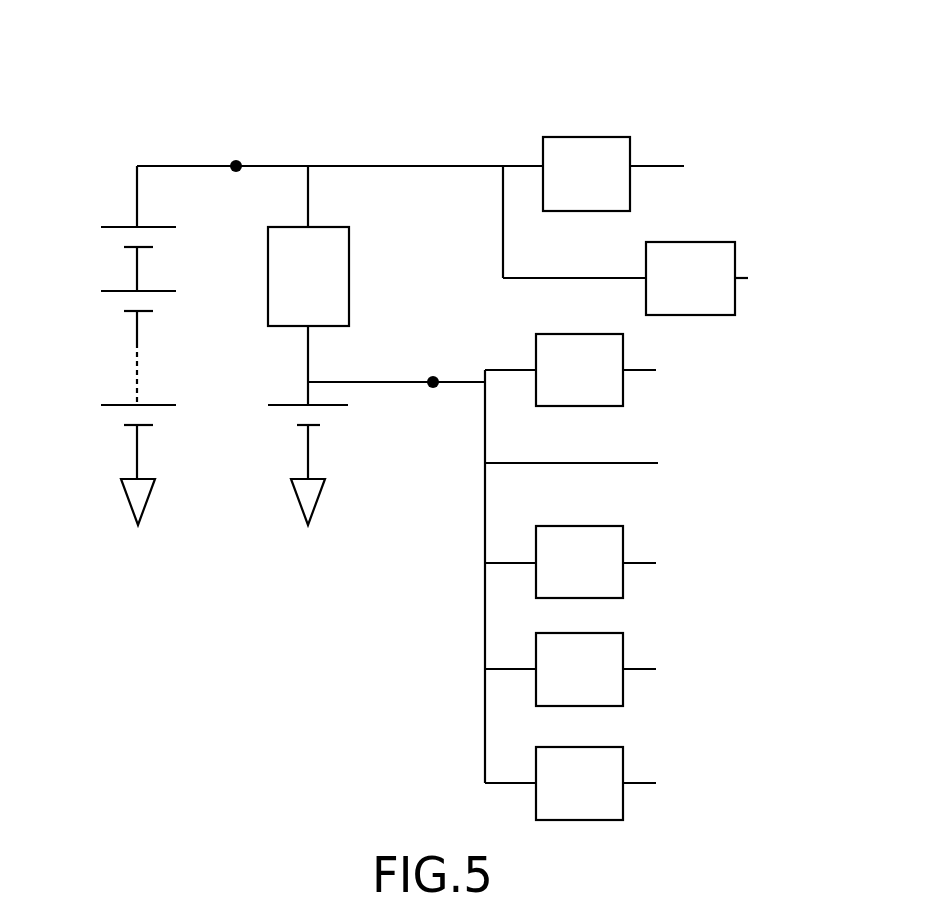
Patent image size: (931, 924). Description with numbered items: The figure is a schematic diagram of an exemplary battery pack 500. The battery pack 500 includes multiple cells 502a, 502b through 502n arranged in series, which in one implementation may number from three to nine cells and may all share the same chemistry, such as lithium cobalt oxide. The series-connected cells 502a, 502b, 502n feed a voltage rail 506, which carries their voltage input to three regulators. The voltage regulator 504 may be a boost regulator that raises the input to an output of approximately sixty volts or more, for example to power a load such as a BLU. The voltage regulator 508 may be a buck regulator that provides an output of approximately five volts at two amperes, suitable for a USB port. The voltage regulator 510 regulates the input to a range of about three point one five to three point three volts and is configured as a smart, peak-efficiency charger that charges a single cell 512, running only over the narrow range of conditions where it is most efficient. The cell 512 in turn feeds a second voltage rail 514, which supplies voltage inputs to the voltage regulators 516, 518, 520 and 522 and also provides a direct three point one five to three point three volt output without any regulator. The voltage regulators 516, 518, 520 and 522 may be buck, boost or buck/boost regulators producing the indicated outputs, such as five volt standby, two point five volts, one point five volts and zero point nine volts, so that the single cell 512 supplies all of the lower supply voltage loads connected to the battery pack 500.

The battery pack 500 is at (383, 32).
The cell 502a is at (112, 238).
The cell 502b is at (112, 301).
The cell 502n is at (118, 416).
The voltage regulator 504 is at (593, 137).
The voltage rail 506 is at (236, 160).
The voltage regulator 508 is at (703, 242).
The voltage regulator 510 is at (278, 277).
The cell 512 is at (283, 415).
The voltage rail 514 is at (432, 389).
The voltage regulator 516 is at (536, 355).
The voltage regulator 518 is at (556, 526).
The voltage regulator 520 is at (623, 648).
The voltage regulator 522 is at (562, 747).